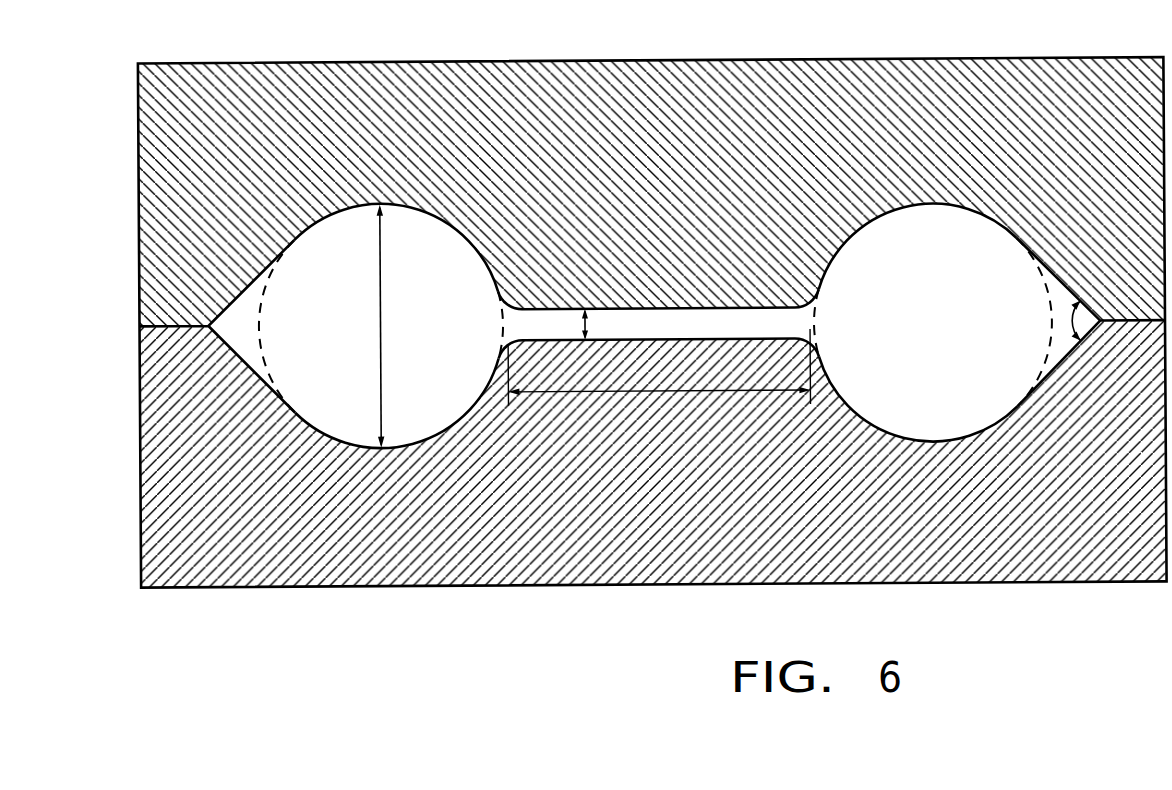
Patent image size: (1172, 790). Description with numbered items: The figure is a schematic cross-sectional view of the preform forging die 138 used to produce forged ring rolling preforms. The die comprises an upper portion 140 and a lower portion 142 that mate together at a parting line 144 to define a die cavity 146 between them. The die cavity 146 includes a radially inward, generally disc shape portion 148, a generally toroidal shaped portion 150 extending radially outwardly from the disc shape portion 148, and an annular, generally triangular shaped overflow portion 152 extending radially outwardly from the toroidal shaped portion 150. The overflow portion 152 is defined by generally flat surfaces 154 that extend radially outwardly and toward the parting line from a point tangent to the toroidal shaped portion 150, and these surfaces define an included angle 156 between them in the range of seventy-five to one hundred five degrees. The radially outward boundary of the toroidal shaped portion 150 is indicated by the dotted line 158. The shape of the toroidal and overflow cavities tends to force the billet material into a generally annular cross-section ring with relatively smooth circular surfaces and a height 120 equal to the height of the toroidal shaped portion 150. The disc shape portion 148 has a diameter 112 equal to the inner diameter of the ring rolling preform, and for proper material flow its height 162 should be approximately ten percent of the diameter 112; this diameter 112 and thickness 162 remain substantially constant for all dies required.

The preform forging die 138 is at (566, 60).
The upper portion 140 is at (152, 204).
The lower portion 142 is at (157, 480).
The parting line 144 is at (160, 330).
The die cavity 146 is at (483, 248).
The dotted line 158 is at (260, 313).
The height 120 is at (381, 290).
The disc shape portion 148 is at (697, 320).
The height of the disc shaped portion 162 is at (592, 322).
The diameter 112 is at (572, 390).
The toroidal shaped portion 150 is at (932, 238).
The overflow portion 152 is at (1070, 297).
The flat surfaces 154 is at (1052, 358).
The included angle 156 is at (1090, 313).